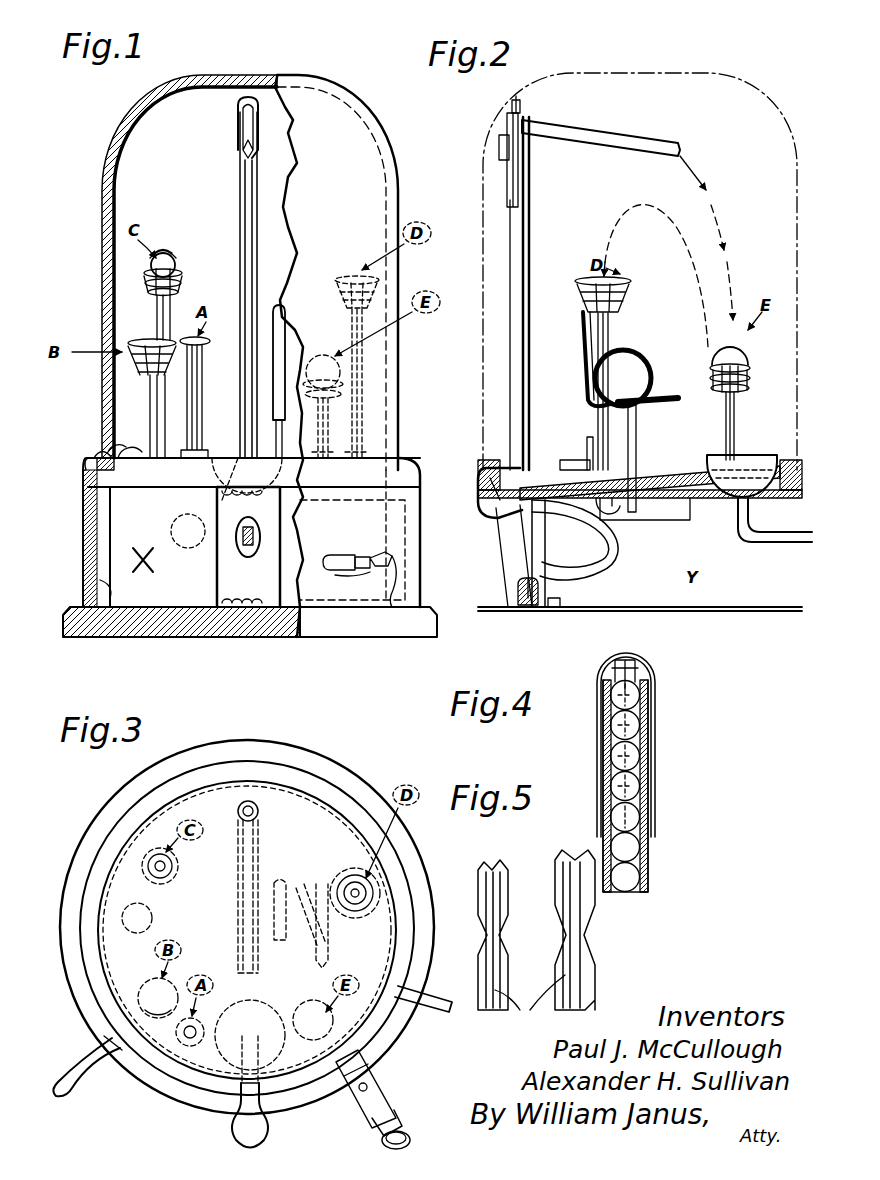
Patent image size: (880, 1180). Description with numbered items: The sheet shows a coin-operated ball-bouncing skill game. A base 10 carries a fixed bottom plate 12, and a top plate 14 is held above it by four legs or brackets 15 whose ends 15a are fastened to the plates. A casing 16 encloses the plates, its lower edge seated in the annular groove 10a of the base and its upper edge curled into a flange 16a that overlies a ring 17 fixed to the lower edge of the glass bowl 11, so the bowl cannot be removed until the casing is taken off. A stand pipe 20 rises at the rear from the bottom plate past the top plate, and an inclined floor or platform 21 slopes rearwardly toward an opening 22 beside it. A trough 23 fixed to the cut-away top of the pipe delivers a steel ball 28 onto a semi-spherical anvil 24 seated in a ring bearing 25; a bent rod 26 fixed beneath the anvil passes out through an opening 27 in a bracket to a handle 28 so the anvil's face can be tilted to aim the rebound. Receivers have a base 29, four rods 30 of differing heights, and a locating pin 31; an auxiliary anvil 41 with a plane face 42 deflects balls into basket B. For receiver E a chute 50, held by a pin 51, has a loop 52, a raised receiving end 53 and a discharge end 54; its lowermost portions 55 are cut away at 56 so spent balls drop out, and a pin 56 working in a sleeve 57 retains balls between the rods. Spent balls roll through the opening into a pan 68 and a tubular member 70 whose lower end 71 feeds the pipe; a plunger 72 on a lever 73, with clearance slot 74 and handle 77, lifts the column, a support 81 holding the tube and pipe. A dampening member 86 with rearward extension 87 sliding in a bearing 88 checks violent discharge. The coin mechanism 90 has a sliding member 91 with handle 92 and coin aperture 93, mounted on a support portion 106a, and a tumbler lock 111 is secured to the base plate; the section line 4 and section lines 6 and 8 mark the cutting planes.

In FIG. 2, the section line 4 is at (530, 104).
In FIG. 2, the section line 6 is at (478, 496).
In FIG. 1, the section line 8 is at (60, 480).
In FIG. 3, the base 10 is at (352, 780).
In FIG. 1, the annular groove 10a is at (80, 637).
In FIG. 1, the glass cylinder or bowl 11 is at (102, 180).
In FIG. 3, the glass cylinder or bowl 11 is at (120, 970).
In FIG. 1, the bottom plate 12 is at (168, 638).
In FIG. 1, the top plate 14 is at (163, 488).
In FIG. 2, the top plate 14 is at (668, 498).
In FIG. 1, the legs or brackets 15 is at (110, 558).
In FIG. 1, the leg ends 15a is at (283, 663).
In FIG. 1, the casing 16 is at (83, 530).
In FIG. 3, the casing 16 is at (120, 820).
In FIG. 1, the flange 16a is at (88, 460).
In FIG. 1, the ring 17 is at (95, 465).
In FIG. 1, the stand pipe or delivery tube 20 is at (240, 212).
In FIG. 2, the stand pipe or delivery tube 20 is at (522, 322).
In FIG. 3, the stand pipe or delivery tube 20 is at (250, 802).
In FIG. 4, the stand pipe or delivery tube 20 is at (649, 852).
In FIG. 2, the floor or platform 21 is at (680, 470).
In FIG. 2, the opening 22 is at (482, 470).
In FIG. 1, the trough 23 is at (243, 132).
In FIG. 2, the trough 23 is at (660, 140).
In FIG. 3, the trough 23 is at (238, 895).
In FIG. 1, the anvil 24 is at (188, 531).
In FIG. 2, the anvil 24 is at (745, 456).
In FIG. 3, the anvil 24 is at (224, 1006).
In FIG. 2, the ring bearing 25 is at (706, 500).
In FIG. 1, the rod 26 is at (250, 556).
In FIG. 2, the rod 26 is at (766, 544).
In FIG. 3, the rod 26 is at (240, 1100).
In FIG. 1, the opening 27 is at (260, 538).
In FIG. 3, the handle / steel ball 28 is at (266, 1132).
In FIG. 4, the handle / steel ball 28 is at (640, 784).
In FIG. 2, the receiver base 29 is at (574, 462).
In FIG. 1, the rods 30 is at (157, 314).
In FIG. 2, the rods 30 is at (612, 328).
In FIG. 2, the pin 31 is at (636, 506).
In FIG. 1, the auxiliary anvil 41 is at (98, 452).
In FIG. 3, the auxiliary anvil 41 is at (125, 912).
In FIG. 1, the plane face 42 is at (126, 446).
In FIG. 1, the chute 50 is at (270, 400).
In FIG. 2, the chute 50 is at (586, 390).
In FIG. 3, the chute 50 is at (298, 888).
In FIG. 5, the chute 50 is at (496, 858).
In FIG. 1, the pin 51 is at (276, 434).
In FIG. 2, the pin 51 is at (637, 440).
In FIG. 2, the loop 52 is at (636, 356).
In FIG. 1, the receiving end of chute 53 is at (292, 285).
In FIG. 2, the receiving end of chute 53 is at (582, 332).
In FIG. 3, the receiving end of chute 53 is at (282, 878).
In FIG. 2, the discharge end of chute 54 is at (672, 396).
In FIG. 3, the discharge end of chute 54 is at (328, 952).
In FIG. 5, the lowermost portions of chute 55 is at (530, 1008).
In FIG. 2, the cut-away / pin 56 is at (586, 440).
In FIG. 5, the cut-away / pin 56 is at (560, 934).
In FIG. 2, the sleeve 57 is at (610, 512).
In FIG. 2, the pan 68 is at (498, 522).
In FIG. 2, the tubular member 70 is at (602, 560).
In FIG. 2, the lower end of tubular member 71 is at (548, 600).
In FIG. 2, the plunger 72 is at (518, 590).
In FIG. 2, the lever 73 is at (526, 608).
In FIG. 3, the lever 73 is at (112, 1055).
In FIG. 2, the slot 74 is at (524, 578).
In FIG. 3, the handle 77 is at (58, 1096).
In FIG. 2, the support 81 is at (565, 600).
In FIG. 1, the dampening member 86 is at (238, 103).
In FIG. 2, the dampening member 86 is at (507, 182).
In FIG. 4, the dampening member 86 is at (656, 720).
In FIG. 2, the rearward extension 87 is at (508, 116).
In FIG. 4, the rearward extension 87 is at (630, 672).
In FIG. 2, the bearing 88 is at (499, 146).
In FIG. 1, the coin mechanism 90 is at (352, 556).
In FIG. 3, the coin mechanism 90 is at (405, 1098).
In FIG. 1, the sliding member 91 is at (350, 578).
In FIG. 3, the sliding member 91 is at (372, 1128).
In FIG. 1, the handle 92 is at (395, 607).
In FIG. 3, the handle 92 is at (410, 1140).
In FIG. 3, the coin aperture 93 is at (368, 1085).
In FIG. 1, the support portion 106a is at (330, 553).
In FIG. 3, the support portion 106a is at (362, 1123).
In FIG. 3, the tumbler lock 111 is at (440, 1008).